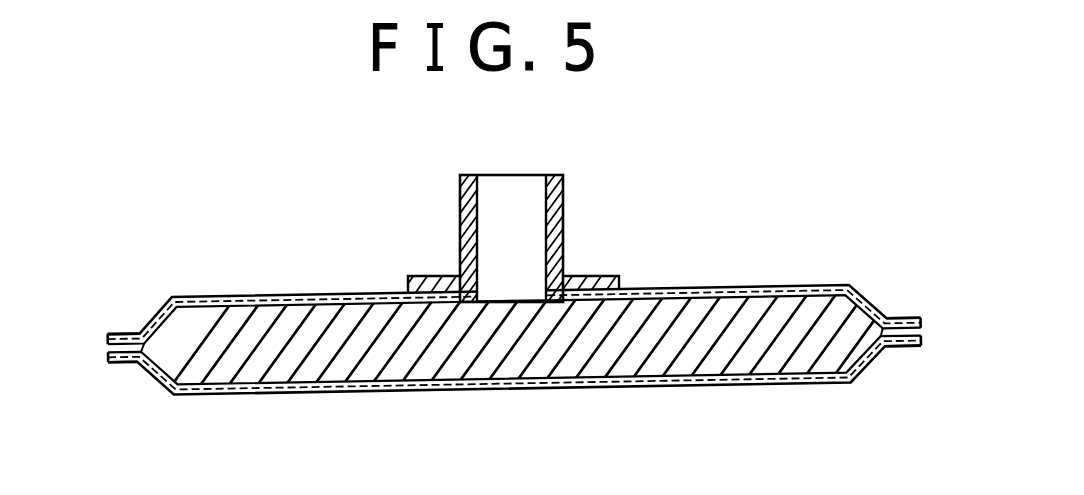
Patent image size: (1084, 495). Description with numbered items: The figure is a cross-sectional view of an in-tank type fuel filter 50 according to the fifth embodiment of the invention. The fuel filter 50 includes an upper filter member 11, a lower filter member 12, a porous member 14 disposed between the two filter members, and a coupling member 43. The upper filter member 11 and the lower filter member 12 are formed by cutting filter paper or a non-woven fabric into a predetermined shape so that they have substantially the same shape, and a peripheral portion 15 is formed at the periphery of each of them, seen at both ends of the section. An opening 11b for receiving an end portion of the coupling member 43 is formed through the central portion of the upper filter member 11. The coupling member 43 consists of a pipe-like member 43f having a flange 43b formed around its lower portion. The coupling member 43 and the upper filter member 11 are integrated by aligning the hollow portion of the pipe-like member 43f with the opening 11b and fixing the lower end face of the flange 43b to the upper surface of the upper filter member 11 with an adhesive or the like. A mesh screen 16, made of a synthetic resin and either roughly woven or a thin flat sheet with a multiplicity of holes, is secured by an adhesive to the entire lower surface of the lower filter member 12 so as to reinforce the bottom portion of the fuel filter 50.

The upper filter member 11 is at (240, 297).
The opening 11b is at (507, 302).
The lower filter member 12 is at (218, 396).
The porous member 14 is at (752, 340).
The peripheral portion 15 is at (119, 333).
The mesh screen 16 is at (384, 390).
The coupling member 43 is at (544, 233).
The flange 43b is at (597, 277).
The pipe-like member 43f is at (460, 215).
The fuel filter 50 is at (510, 314).